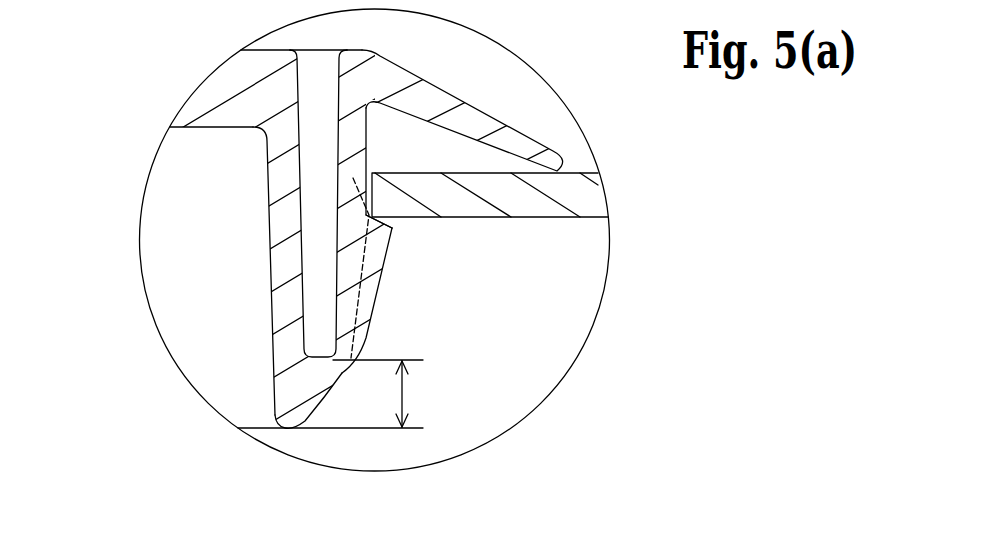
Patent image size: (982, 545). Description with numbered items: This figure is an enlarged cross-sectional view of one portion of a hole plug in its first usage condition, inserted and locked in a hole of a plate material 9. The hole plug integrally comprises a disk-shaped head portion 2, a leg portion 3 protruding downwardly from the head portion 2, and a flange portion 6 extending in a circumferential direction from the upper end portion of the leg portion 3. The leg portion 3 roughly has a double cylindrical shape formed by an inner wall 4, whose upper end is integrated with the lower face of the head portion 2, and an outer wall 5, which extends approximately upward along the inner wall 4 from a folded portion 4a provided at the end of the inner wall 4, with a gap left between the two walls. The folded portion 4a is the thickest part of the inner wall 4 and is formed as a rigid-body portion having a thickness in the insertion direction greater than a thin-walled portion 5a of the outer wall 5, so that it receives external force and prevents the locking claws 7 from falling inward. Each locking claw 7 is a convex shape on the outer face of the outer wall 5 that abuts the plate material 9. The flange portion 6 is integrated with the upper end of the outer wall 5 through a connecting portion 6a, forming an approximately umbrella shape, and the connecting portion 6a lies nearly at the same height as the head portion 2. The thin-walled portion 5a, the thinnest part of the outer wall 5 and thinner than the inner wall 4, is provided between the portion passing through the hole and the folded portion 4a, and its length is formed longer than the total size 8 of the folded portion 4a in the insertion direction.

The head portion 2 is at (205, 98).
The leg portion 3 is at (92, 228).
The inner wall 4 is at (262, 186).
The folded portion 4a is at (298, 418).
The outer wall 5 is at (352, 188).
The thin-walled portion 5a is at (392, 228).
The flange portion 6 is at (480, 117).
The connecting portion 6a is at (355, 63).
The locking claw 7 is at (389, 223).
The total size 8 is at (335, 394).
The plate material 9 is at (590, 198).